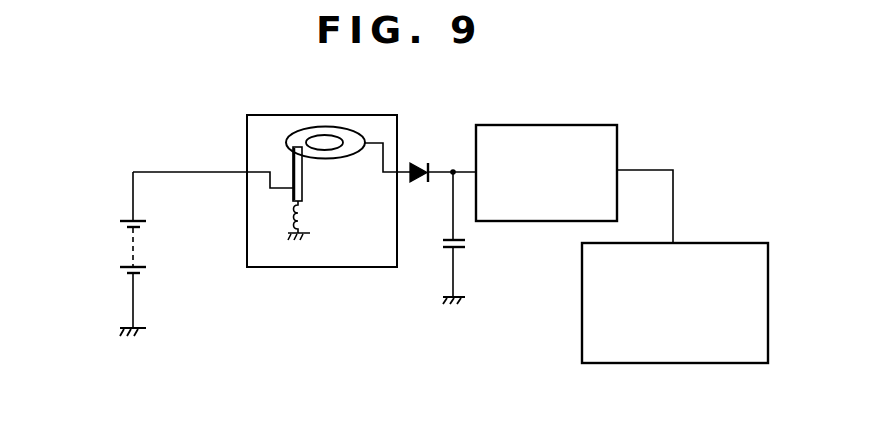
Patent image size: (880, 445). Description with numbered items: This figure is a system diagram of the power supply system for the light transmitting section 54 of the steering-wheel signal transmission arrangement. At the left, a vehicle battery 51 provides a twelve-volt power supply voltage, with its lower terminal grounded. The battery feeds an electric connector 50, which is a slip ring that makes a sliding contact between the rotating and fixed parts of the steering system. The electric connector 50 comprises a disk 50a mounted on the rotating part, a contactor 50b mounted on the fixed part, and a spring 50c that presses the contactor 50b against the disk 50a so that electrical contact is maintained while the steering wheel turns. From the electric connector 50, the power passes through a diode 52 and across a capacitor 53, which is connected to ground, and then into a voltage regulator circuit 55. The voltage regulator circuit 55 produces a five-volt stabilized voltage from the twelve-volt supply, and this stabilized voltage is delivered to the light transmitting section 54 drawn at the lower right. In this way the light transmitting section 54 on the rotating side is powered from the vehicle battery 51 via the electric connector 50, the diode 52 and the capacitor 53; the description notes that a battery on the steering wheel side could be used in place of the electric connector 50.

The electric connector 50 is at (352, 113).
The disk 50a is at (347, 158).
The contactor 50b is at (292, 158).
The spring 50c is at (302, 217).
The vehicle battery 51 is at (135, 250).
The diode 52 is at (420, 163).
The capacitor 53 is at (463, 243).
The light transmitting section 54 is at (695, 242).
The voltage regulator circuit 55 is at (545, 125).